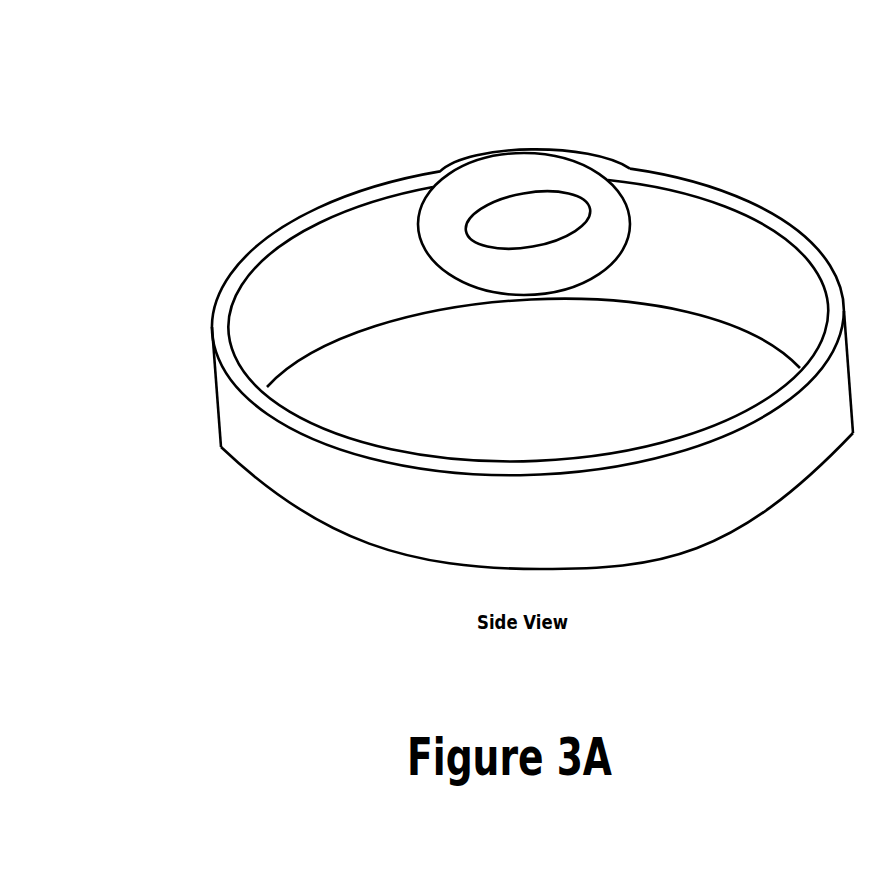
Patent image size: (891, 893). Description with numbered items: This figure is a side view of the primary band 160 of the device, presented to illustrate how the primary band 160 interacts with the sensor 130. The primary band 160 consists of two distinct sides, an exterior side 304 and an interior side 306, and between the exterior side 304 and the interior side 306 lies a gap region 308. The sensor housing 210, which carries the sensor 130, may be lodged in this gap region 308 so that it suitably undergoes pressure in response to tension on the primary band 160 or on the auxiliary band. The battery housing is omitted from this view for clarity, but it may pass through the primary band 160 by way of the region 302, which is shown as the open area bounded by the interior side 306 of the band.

The primary band 160 is at (611, 104).
The exterior side 304 is at (302, 213).
The gap region 308 is at (251, 263).
The sensor housing 210 is at (420, 242).
The sensor 130 is at (510, 198).
The region 302 is at (553, 356).
The interior side 306 is at (342, 307).